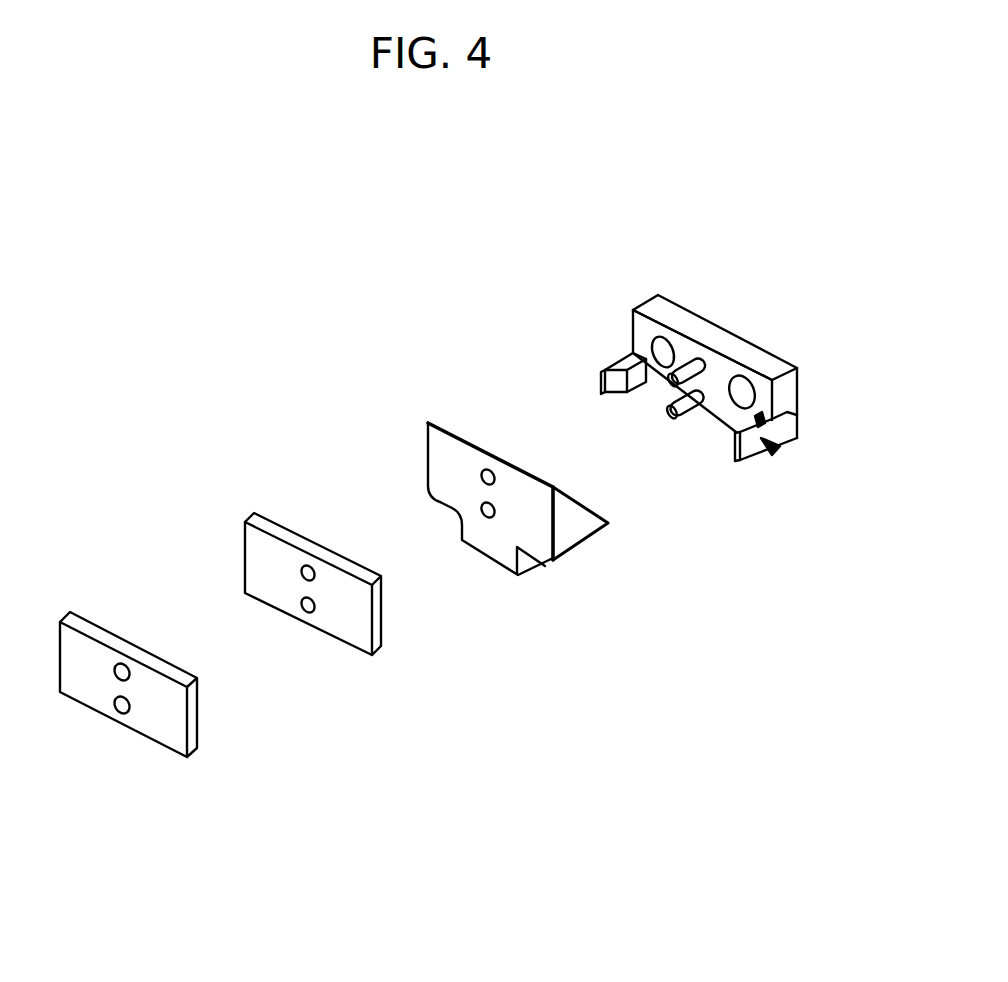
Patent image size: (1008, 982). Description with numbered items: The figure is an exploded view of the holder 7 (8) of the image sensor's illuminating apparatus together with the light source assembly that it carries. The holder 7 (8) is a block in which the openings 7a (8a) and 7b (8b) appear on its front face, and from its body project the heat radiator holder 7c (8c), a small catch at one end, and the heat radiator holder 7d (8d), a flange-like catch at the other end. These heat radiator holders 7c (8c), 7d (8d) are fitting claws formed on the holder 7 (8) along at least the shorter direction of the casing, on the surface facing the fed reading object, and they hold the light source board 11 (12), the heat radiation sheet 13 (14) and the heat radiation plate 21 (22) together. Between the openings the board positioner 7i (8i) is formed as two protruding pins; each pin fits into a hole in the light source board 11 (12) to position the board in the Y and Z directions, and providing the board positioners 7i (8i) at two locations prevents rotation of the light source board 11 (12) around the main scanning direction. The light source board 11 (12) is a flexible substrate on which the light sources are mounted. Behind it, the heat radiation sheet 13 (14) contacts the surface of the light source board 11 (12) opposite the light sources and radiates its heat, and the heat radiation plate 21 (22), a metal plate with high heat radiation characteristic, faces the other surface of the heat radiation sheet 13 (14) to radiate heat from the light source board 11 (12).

The holder 7 is at (655, 399).
The holder 8 is at (633, 307).
The first through hole of holder 7a is at (570, 293).
The first through hole of second holder 8a is at (657, 346).
The second through hole of holder 7b is at (809, 351).
The second through hole of second holder 8b is at (744, 394).
The heat radiator holder 7c is at (532, 340).
The heat radiator holder 8c is at (598, 382).
The heat radiator holder 7d is at (787, 537).
The heat radiator holder 8d is at (768, 446).
The board positioner 7i is at (730, 293).
The board positioner 8i is at (710, 347).
The light source board 11 is at (531, 565).
The light source board 12 is at (523, 512).
The heat radiation sheet 13 is at (345, 675).
The heat radiation sheet 14 is at (332, 612).
The heat radiation plate 21 is at (160, 762).
The heat radiation plate 22 is at (152, 690).